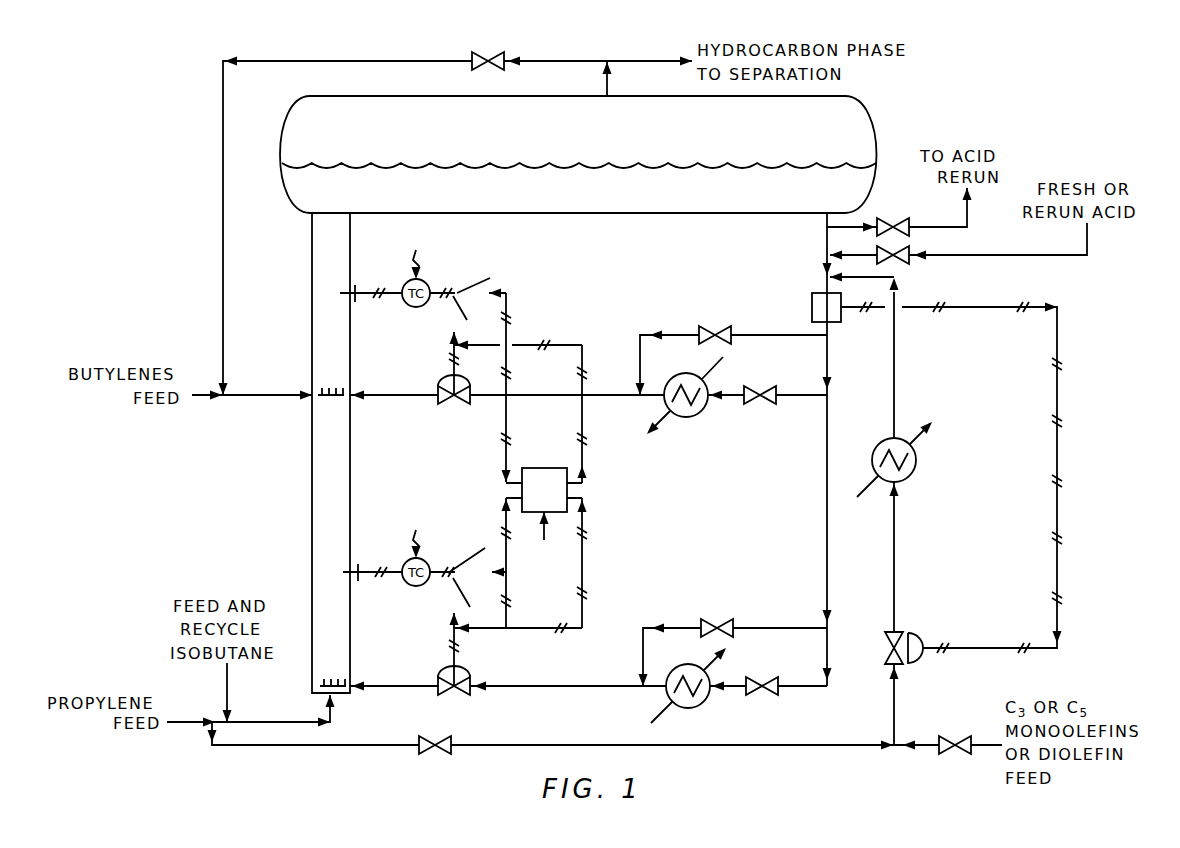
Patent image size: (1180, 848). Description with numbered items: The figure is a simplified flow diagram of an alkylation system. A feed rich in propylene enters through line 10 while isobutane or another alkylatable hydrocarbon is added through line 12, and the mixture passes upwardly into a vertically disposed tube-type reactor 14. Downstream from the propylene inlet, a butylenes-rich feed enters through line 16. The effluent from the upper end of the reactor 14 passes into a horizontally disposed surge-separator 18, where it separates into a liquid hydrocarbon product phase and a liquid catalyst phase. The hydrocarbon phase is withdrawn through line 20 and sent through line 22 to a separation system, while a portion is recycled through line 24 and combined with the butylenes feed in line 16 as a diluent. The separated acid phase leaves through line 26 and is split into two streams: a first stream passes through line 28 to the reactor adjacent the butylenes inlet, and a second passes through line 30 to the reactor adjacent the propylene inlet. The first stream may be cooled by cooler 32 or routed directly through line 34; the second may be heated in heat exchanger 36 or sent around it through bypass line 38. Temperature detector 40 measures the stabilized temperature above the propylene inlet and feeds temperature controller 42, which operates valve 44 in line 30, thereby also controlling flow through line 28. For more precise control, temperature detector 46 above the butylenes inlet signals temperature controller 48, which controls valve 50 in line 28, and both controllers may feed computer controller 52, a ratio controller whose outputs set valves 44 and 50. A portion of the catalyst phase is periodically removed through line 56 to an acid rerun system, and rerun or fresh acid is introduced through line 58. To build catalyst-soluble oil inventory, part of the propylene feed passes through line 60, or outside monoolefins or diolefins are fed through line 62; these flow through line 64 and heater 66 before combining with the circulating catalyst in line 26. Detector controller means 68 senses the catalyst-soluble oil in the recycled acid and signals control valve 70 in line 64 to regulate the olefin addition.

The propylene feed line 10 is at (262, 722).
The isobutane feed line 12 is at (226, 702).
The tube-type reactor 14 is at (351, 482).
The butylenes feed line 16 is at (215, 398).
The surge-separator 18 is at (590, 147).
The hydrocarbon product phase withdrawal line 20 is at (607, 82).
The hydrocarbon product line to separation 22 is at (644, 61).
The hydrocarbon recycle line 24 is at (391, 61).
The acid phase line 26 is at (826, 250).
The first recycled catalyst line 28 is at (412, 397).
The second recycled catalyst line 30 is at (410, 688).
The cooler 32 is at (702, 412).
The cooler bypass line 34 is at (731, 335).
The heat exchanger 36 is at (704, 702).
The bypass line 38 is at (735, 628).
The temperature detector 40 is at (344, 575).
The temperature controller 42 is at (406, 563).
The valve 44 is at (440, 678).
The temperature detector 46 is at (353, 296).
The temperature controller 48 is at (429, 290).
The valve 50 is at (438, 386).
The computer controller 52 is at (522, 468).
The acid rerun line 56 is at (960, 225).
The fresh or rerun acid line 58 is at (1030, 256).
The propylene branch line 60 is at (560, 745).
The olefin feed line 62 is at (925, 746).
The olefinic feed line 64 is at (893, 365).
The heater 66 is at (878, 448).
The detector controller means 68 is at (812, 308).
The control valve 70 is at (884, 636).